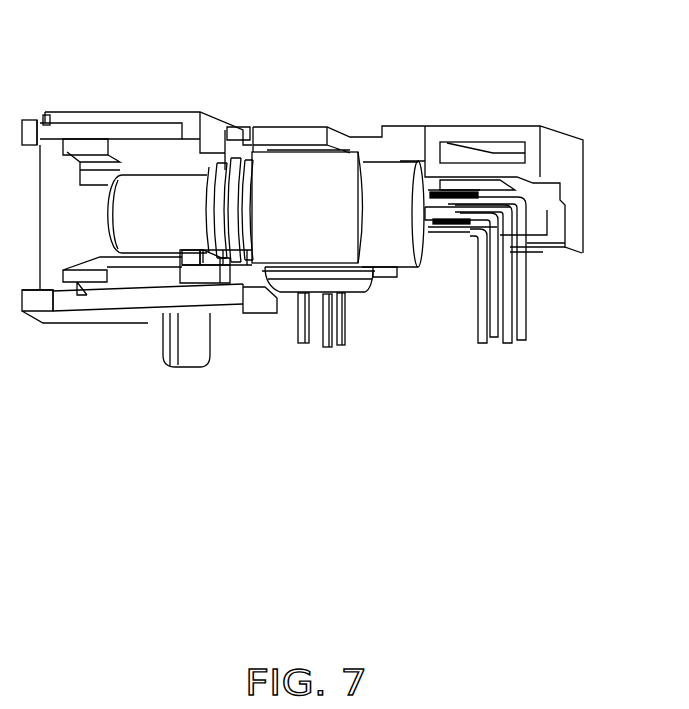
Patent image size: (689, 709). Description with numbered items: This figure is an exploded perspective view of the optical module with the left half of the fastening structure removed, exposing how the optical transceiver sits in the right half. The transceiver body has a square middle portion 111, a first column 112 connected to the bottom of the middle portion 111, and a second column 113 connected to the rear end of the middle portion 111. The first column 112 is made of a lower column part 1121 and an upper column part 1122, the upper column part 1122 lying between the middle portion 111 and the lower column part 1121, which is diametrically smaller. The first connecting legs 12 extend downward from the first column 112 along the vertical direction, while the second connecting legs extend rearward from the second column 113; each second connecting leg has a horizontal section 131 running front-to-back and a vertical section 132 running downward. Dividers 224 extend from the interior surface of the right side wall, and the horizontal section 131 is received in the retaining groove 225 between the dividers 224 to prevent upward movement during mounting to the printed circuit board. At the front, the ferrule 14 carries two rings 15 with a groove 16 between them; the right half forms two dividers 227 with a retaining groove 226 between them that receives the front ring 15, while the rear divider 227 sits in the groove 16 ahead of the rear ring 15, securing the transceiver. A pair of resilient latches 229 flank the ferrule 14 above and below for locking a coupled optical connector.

The resilient latches 229 is at (83, 258).
The ferrule 14 is at (150, 210).
The rings 15 is at (200, 180).
The groove 16 is at (240, 180).
The middle portion 111 is at (312, 183).
The second column 113 is at (388, 188).
The first column 112 is at (363, 283).
The lower column part 1121 is at (277, 297).
The upper column part 1122 is at (367, 283).
The first connecting legs 12 is at (353, 351).
The retaining groove 225 is at (438, 203).
The dividers 224 is at (467, 200).
The horizontal section 131 is at (493, 217).
The pin legs 132 is at (507, 280).
The dividers 227 is at (190, 258).
The retaining groove 226 is at (207, 257).